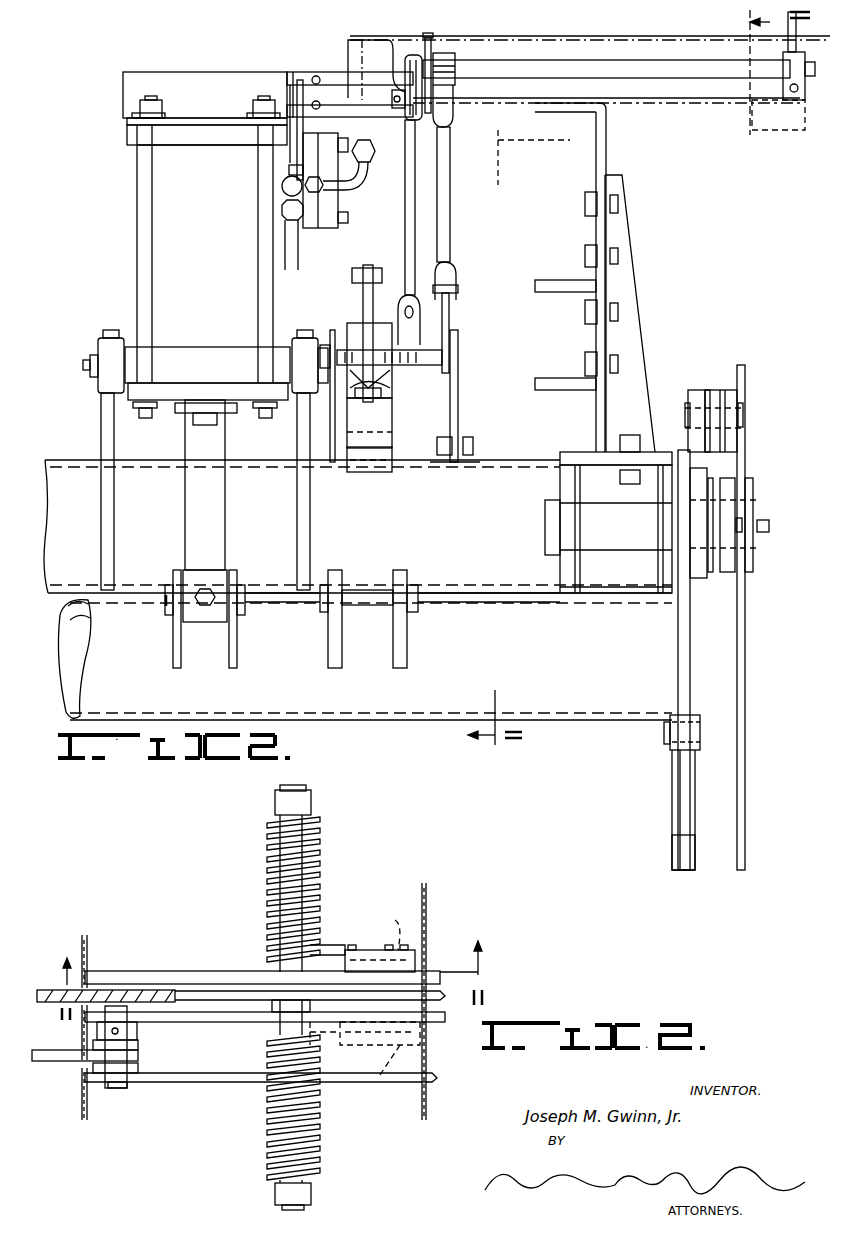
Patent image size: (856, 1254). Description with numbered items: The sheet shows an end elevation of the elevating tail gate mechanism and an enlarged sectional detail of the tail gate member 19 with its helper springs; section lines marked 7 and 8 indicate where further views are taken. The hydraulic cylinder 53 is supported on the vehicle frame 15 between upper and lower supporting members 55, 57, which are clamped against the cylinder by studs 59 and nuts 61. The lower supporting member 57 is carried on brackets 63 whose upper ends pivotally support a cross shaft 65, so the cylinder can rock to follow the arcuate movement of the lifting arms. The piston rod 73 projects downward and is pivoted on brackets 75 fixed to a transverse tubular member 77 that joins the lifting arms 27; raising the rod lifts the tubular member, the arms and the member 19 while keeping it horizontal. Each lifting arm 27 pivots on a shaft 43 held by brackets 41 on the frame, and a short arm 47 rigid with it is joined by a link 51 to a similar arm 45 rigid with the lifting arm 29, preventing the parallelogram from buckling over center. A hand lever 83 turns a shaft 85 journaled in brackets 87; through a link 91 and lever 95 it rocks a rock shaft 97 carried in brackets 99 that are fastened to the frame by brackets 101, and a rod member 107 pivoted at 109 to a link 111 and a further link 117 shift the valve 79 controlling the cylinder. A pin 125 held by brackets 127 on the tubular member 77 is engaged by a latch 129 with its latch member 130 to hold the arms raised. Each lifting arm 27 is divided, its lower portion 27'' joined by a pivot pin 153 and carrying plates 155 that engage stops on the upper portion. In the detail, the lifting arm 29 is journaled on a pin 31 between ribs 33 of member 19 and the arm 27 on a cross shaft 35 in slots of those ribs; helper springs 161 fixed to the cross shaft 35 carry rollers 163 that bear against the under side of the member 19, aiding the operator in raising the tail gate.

In FIG. 5, the section line 7- 7 is at (624, 379).
In FIG. 6, the section line 8- 8 is at (267, 967).
In FIG. 5, the vehicle frame 15 is at (55, 480).
In FIG. 6, the load carrying and tail gate member 19 is at (438, 1085).
In FIG. 5, the lifting arm 27 is at (657, 660).
In FIG. 6, the lifting arm 27 is at (241, 969).
In FIG. 5, the lower lifting arm portion 27'' is at (650, 860).
In FIG. 5, the lifting arm 29 is at (740, 725).
In FIG. 6, the lifting arm 29 is at (68, 1062).
In FIG. 6, the pin 31 is at (116, 1093).
In FIG. 6, the ribs 33 is at (180, 1025).
In FIG. 6, the cross shaft 35 is at (262, 1070).
In FIG. 5, the brackets 41 is at (560, 560).
In FIG. 5, the shaft 43 is at (760, 505).
In FIG. 5, the link or arm 45 is at (735, 445).
In FIG. 5, the link or arm 47 is at (695, 438).
In FIG. 5, the link 51 is at (710, 390).
In FIG. 5, the hydraulic cylinder 53 is at (150, 225).
In FIG. 5, the upper supporting member 55 is at (127, 133).
In FIG. 5, the lower supporting member 57 is at (128, 393).
In FIG. 5, the studs 59 is at (150, 367).
In FIG. 5, the nuts 61 is at (140, 106).
In FIG. 5, the brackets 63 is at (103, 523).
In FIG. 5, the cross shaft 65 is at (118, 338).
In FIG. 5, the piston rod 73 is at (185, 440).
In FIG. 5, the brackets 75 is at (173, 645).
In FIG. 5, the tubular member 77 is at (78, 685).
In FIG. 5, the valve 79 is at (315, 222).
In FIG. 5, the hand lever 83 is at (792, 44).
In FIG. 5, the shaft 85 is at (770, 70).
In FIG. 5, the brackets 87 is at (429, 37).
In FIG. 5, the link 91 is at (450, 197).
In FIG. 5, the lever 95 is at (449, 320).
In FIG. 5, the rock shaft 97 is at (435, 365).
In FIG. 5, the brackets 99 is at (458, 392).
In FIG. 5, the brackets 101 is at (473, 458).
In FIG. 5, the rod member 107 is at (405, 208).
In FIG. 5, the pivotal connection 109 is at (402, 110).
In FIG. 5, the link 111 is at (376, 70).
In FIG. 5, the link 117 is at (297, 146).
In FIG. 5, the pin 125 is at (360, 608).
In FIG. 5, the brackets 127 is at (328, 655).
In FIG. 5, the latch 129 is at (385, 436).
In FIG. 5, the latch member 130 is at (395, 458).
In FIG. 5, the pivot pin 153 is at (668, 735).
In FIG. 5, the plates 155 is at (672, 803).
In FIG. 6, the helper springs 161 is at (320, 838).
In FIG. 6, the roller 163 is at (365, 1010).